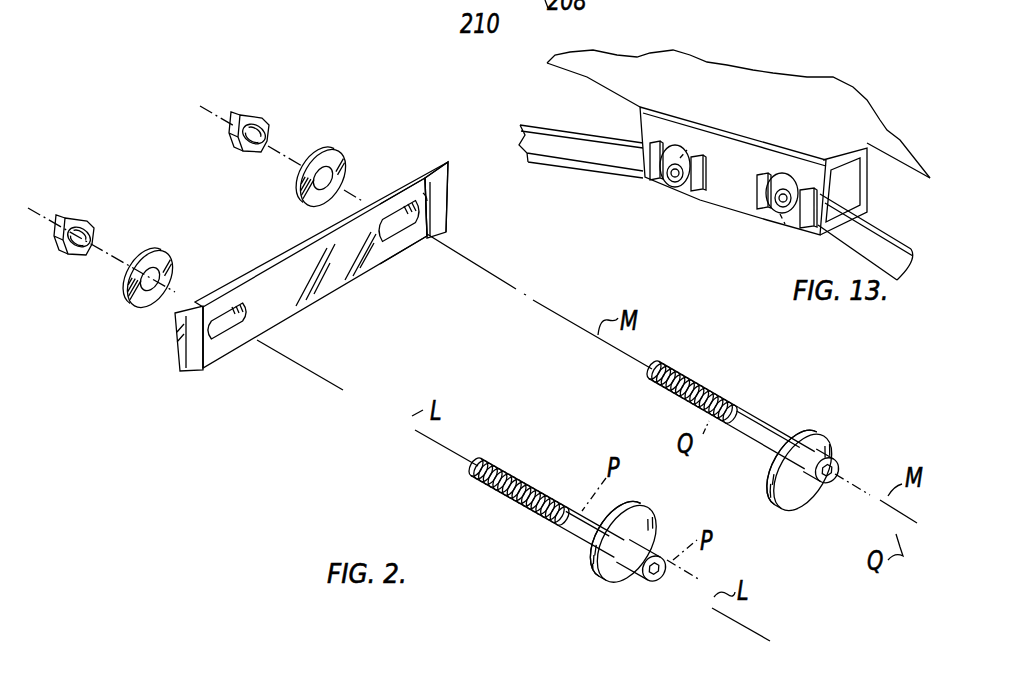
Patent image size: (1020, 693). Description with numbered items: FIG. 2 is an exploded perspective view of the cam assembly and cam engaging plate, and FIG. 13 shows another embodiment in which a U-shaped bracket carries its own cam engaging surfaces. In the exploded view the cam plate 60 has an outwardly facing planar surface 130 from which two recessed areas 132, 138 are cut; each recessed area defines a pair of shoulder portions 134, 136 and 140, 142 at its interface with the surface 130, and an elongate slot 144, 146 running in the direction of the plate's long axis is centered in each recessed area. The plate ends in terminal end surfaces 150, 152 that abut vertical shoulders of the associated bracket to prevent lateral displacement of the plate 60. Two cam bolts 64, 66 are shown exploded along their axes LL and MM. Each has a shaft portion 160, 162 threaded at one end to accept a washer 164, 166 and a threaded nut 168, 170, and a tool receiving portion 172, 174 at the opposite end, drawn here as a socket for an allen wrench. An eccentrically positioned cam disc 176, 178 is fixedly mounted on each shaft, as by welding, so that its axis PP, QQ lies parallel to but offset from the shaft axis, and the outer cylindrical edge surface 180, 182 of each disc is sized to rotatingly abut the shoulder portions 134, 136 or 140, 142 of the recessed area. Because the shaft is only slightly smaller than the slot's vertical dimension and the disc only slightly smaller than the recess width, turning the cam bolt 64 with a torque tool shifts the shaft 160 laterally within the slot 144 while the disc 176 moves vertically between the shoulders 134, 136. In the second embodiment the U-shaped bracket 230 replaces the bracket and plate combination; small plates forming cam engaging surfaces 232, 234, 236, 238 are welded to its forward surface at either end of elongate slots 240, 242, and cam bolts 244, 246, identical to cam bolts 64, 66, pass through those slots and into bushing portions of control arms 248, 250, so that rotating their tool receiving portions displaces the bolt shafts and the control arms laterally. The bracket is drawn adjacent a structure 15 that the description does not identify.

In FIG. 2, the cam plate 60 is at (327, 309).
In FIG. 2, the outwardly facing planar surface 130 is at (292, 313).
In FIG. 2, the recessed area 132 is at (231, 304).
In FIG. 2, the shoulder portion 134 is at (214, 345).
In FIG. 2, the shoulder portion 136 is at (241, 306).
In FIG. 2, the recessed area 138 is at (398, 196).
In FIG. 2, the shoulder portion 140 is at (447, 160).
In FIG. 2, the shoulder portion 142 is at (380, 203).
In FIG. 2, the elongate slot 144 is at (220, 318).
In FIG. 2, the elongate slot 146 is at (401, 233).
In FIG. 2, the terminal end surface 150 is at (177, 340).
In FIG. 2, the terminal end surface 152 is at (450, 214).
In FIG. 2, the cam bolt 64 is at (596, 541).
In FIG. 2, the cam bolt 66 is at (778, 451).
In FIG. 2, the shaft portion 160 is at (510, 478).
In FIG. 2, the shaft portion 162 is at (703, 385).
In FIG. 2, the washer 164 is at (133, 305).
In FIG. 2, the washer 166 is at (336, 162).
In FIG. 2, the threaded nut 168 is at (82, 216).
In FIG. 2, the threaded nut 170 is at (260, 113).
In FIG. 2, the tool receiving portion 172 is at (657, 577).
In FIG. 2, the tool receiving portion 174 is at (833, 460).
In FIG. 2, the cam disc 176 is at (650, 510).
In FIG. 2, the cam disc 178 is at (793, 497).
In FIG. 2, the outer cylindrical edge surface 180 is at (603, 557).
In FIG. 2, the outer cylindrical edge surface 182 is at (807, 440).
In FIG. 13, the vehicle body 15 is at (650, 60).
In FIG. 13, the U-shaped bracket 230 is at (778, 133).
In FIG. 13, the cam engaging surface 232 is at (658, 147).
In FIG. 13, the cam engaging surface 234 is at (700, 157).
In FIG. 13, the cam engaging surface 236 is at (762, 207).
In FIG. 13, the cam engaging surface 238 is at (835, 170).
In FIG. 13, the elongate slot 240 is at (680, 160).
In FIG. 13, the elongate slot 242 is at (790, 207).
In FIG. 13, the cam bolt 244 is at (683, 183).
In FIG. 13, the cam bolt 246 is at (783, 173).
In FIG. 13, the control arm 248 is at (611, 165).
In FIG. 13, the control arm 250 is at (870, 233).